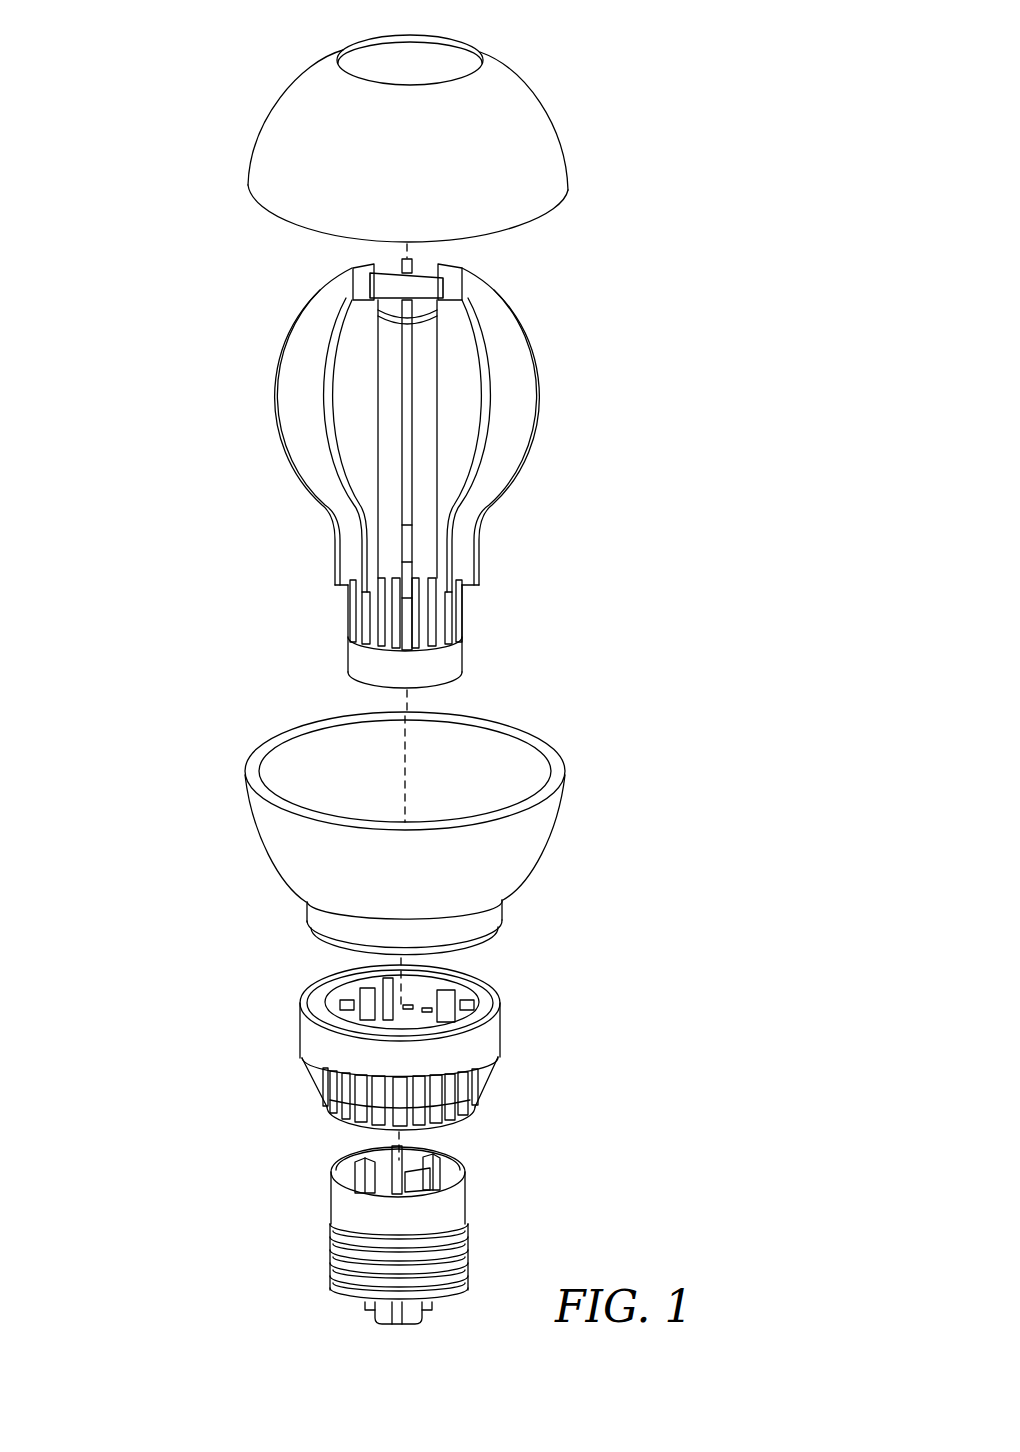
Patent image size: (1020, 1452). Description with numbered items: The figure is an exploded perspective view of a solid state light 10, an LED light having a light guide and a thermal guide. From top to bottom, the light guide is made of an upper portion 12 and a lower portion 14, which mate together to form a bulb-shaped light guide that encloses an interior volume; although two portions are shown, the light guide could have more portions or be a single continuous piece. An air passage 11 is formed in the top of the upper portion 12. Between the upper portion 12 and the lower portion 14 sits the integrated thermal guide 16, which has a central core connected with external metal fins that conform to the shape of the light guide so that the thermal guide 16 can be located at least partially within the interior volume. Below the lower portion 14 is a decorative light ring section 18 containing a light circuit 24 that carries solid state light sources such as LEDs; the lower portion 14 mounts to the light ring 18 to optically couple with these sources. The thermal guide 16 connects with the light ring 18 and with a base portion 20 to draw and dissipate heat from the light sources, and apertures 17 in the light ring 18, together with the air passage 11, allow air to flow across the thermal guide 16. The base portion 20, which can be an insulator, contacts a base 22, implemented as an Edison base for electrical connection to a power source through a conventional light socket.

The solid state light 10 is at (573, 82).
The air passage 11 is at (354, 46).
The upper portion 12 is at (438, 124).
The lower portion 14 is at (556, 764).
The thermal guide 16 is at (522, 383).
The apertures 17 is at (440, 1112).
The light ring section 18 is at (397, 1047).
The base portion 20 is at (425, 1235).
The base 22 is at (462, 1258).
The light circuit 24 is at (318, 1015).